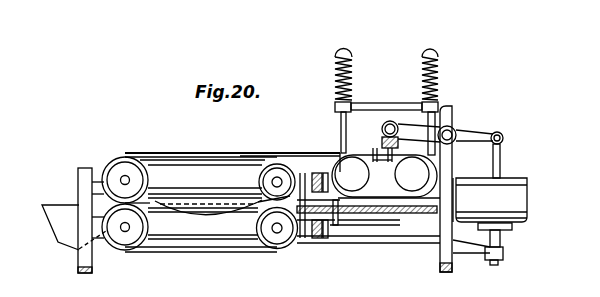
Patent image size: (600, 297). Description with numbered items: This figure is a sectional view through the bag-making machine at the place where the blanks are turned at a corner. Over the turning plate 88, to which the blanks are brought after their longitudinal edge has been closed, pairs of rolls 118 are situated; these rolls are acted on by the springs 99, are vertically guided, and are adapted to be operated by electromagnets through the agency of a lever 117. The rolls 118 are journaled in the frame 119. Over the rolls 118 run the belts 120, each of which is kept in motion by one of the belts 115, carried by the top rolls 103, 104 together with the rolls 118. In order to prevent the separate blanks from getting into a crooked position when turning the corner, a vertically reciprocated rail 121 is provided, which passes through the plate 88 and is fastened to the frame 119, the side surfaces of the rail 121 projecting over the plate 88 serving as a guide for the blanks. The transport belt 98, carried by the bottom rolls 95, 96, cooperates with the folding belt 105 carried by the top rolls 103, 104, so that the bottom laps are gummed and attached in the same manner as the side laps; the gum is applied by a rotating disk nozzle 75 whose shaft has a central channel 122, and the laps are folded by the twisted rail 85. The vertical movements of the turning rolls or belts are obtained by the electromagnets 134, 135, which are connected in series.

The rotating disk nozzle 75 is at (271, 247).
The rail 85 is at (207, 210).
The turning plate 88 is at (420, 216).
The roll 95 is at (300, 243).
The roll 96 is at (128, 240).
The transport belt 98 is at (200, 249).
The spring 99 is at (422, 74).
The top roll 103 is at (282, 167).
The top roll 104 is at (122, 165).
The folding belt 105 is at (196, 160).
The belt 115 is at (322, 154).
The lever 117 is at (465, 133).
The pair of rolls 118 is at (384, 172).
The frame 119 is at (437, 172).
The belt 120 is at (368, 156).
The vertically reciprocated rail 121 is at (372, 226).
The central channel 122 is at (280, 232).
The electromagnet 134 is at (498, 232).
The electromagnet 135 is at (511, 182).